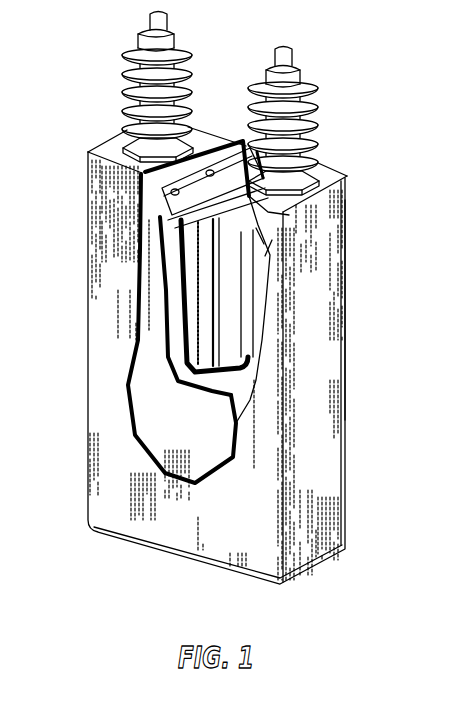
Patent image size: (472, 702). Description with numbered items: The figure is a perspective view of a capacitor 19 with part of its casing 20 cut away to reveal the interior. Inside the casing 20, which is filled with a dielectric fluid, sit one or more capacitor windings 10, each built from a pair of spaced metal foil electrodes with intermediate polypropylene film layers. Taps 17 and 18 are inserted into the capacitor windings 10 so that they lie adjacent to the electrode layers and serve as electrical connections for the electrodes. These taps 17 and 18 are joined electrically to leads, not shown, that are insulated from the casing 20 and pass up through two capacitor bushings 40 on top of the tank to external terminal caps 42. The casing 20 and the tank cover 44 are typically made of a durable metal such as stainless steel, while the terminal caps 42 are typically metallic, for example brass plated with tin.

The capacitor windings 10 is at (207, 280).
The tap 17 is at (137, 203).
The tap 18 is at (197, 140).
The capacitor 19 is at (352, 199).
The casing 20 is at (102, 457).
The capacitor bushing 40 is at (127, 72).
The terminal cap 42 is at (140, 40).
The tank cover 44 is at (98, 148).